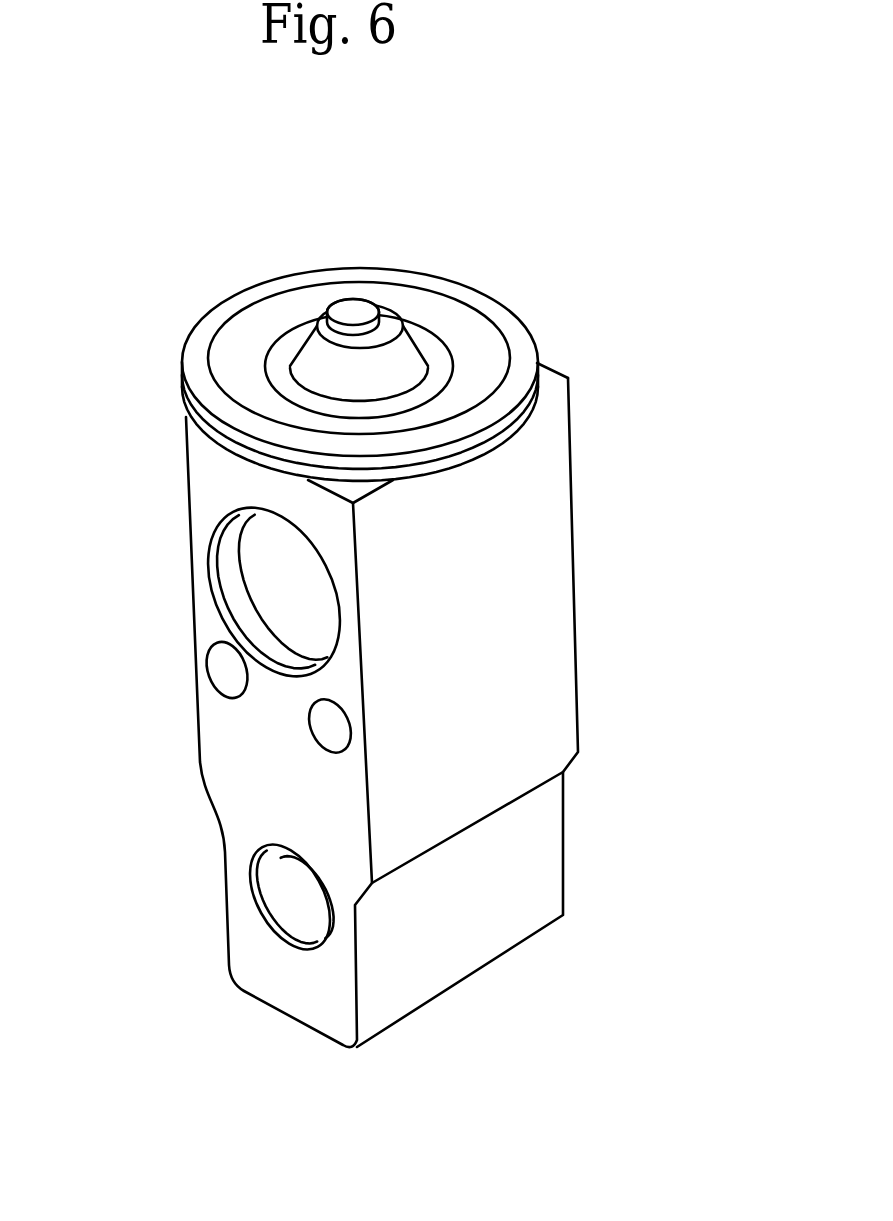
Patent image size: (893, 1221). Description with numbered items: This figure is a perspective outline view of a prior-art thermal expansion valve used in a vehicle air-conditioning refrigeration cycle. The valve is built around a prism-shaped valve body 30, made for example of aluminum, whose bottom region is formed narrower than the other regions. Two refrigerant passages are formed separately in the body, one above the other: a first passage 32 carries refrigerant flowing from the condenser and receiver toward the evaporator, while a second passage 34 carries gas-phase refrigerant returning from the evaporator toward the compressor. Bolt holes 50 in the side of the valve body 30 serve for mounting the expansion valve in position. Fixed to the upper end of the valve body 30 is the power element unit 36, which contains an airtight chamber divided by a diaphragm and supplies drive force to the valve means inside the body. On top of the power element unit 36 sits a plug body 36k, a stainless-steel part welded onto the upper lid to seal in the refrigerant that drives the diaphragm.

The valve body 30 is at (540, 477).
The first passage 32 is at (268, 889).
The second passage 34 is at (238, 579).
The power element unit 36 is at (437, 332).
The plug body 36k is at (355, 308).
The bolt holes 50 is at (222, 667).